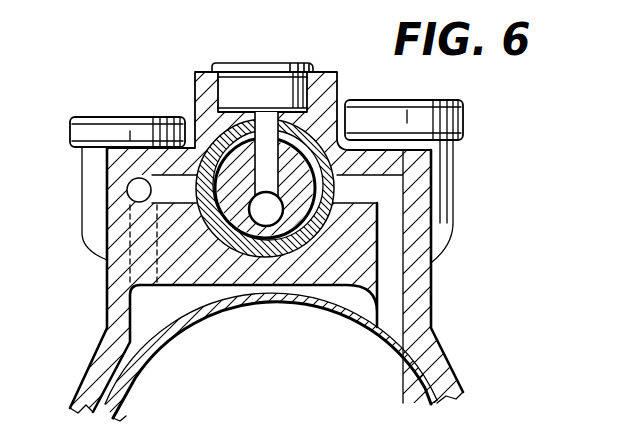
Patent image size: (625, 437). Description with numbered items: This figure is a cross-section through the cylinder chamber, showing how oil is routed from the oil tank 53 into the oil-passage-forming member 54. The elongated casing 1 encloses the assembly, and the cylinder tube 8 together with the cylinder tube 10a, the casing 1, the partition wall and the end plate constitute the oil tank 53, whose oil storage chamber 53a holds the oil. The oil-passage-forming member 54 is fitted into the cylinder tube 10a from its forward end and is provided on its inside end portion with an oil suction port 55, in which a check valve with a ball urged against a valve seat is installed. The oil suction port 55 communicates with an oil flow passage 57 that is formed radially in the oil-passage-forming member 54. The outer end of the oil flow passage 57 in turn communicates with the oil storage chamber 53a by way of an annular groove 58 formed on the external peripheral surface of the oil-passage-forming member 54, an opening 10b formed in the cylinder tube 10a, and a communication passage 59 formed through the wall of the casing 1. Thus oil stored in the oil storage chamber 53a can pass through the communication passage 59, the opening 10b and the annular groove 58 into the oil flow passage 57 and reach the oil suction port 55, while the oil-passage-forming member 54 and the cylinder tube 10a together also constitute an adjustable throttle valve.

The casing 1 is at (422, 312).
The cylinder tube 8 is at (163, 337).
The cylinder tube 10a is at (160, 228).
The opening 10b is at (277, 123).
The oil tank 53 is at (96, 329).
The oil storage chamber 53a is at (150, 312).
The oil-passage-forming member 54 is at (238, 167).
The oil suction port 55 is at (269, 217).
The oil flow passage 57 is at (268, 153).
The annular groove 58 is at (247, 233).
The communication passage 59 is at (140, 190).